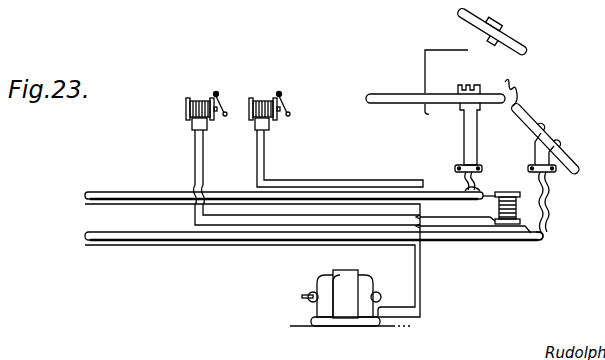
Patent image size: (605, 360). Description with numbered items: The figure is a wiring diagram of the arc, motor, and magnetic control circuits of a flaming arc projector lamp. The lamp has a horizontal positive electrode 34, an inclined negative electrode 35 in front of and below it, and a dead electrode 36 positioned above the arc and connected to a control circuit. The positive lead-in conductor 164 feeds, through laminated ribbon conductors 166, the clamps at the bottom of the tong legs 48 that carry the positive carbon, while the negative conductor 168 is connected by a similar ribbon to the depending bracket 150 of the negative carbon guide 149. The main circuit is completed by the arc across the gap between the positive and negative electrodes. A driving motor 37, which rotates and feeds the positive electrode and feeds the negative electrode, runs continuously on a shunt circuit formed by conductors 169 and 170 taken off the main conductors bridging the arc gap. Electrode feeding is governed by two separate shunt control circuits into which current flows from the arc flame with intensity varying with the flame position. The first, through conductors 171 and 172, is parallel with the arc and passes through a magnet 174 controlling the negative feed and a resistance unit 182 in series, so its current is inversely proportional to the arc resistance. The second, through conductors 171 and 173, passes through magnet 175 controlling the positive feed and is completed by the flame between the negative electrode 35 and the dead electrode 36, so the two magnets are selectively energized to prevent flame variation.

The dead electrode 36 is at (476, 21).
The control circuit conductor 173 is at (424, 53).
The positive electrode 34 is at (386, 93).
The magnet 174 is at (198, 97).
The magnet 175 is at (262, 97).
The tong legs 48 is at (478, 127).
The negative electrode 35 is at (575, 163).
The negative carbon guide 149 is at (534, 136).
The depending bracket 150 is at (537, 163).
The laminated ribbon conductors 166 is at (478, 178).
The positive lead-in conductor 164 is at (126, 193).
The control circuit conductor 171 is at (486, 200).
The shunt circuit conductor 169 is at (131, 205).
The negative conductor 168 is at (154, 235).
The shunt circuit conductor 170 is at (131, 246).
The resistance unit 182 is at (521, 213).
The control circuit conductor 172 is at (522, 241).
The driving motor 37 is at (350, 319).